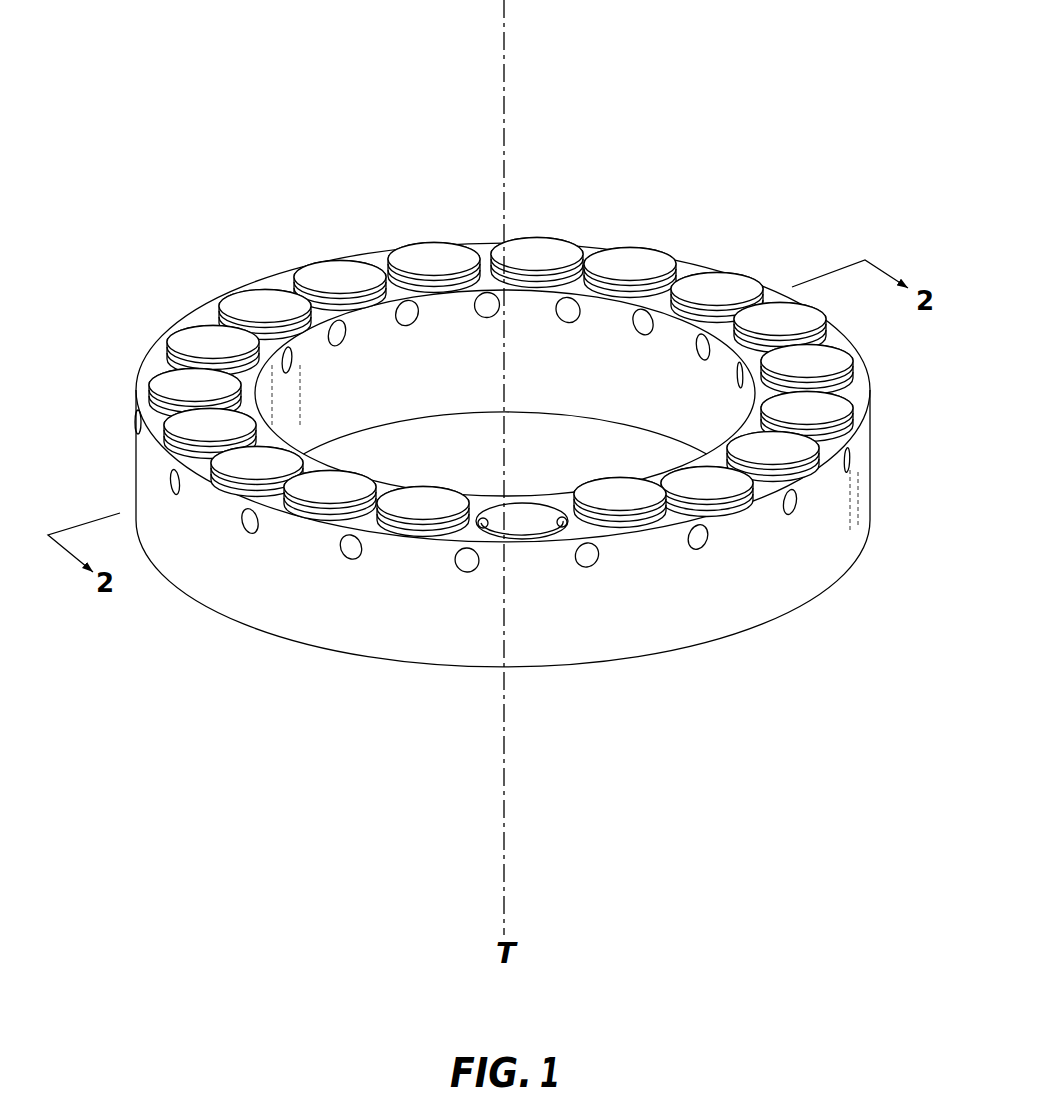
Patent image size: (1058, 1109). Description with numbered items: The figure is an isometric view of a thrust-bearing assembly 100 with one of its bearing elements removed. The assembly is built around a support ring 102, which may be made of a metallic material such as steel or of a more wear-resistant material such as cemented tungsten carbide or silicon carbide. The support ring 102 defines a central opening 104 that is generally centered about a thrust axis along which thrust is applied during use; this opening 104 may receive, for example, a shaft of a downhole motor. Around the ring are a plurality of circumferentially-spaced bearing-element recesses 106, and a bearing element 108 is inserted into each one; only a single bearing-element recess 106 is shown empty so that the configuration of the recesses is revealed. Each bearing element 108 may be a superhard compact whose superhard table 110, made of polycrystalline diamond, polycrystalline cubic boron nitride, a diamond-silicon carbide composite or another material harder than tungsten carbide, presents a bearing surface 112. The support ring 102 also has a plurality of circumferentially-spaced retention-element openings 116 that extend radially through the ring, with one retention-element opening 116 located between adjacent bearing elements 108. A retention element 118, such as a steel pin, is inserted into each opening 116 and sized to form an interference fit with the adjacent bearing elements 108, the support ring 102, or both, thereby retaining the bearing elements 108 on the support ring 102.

The thrust-bearing assembly 100 is at (797, 168).
The support ring 102 is at (787, 577).
The opening 104 is at (524, 476).
The bearing-element recess 106 is at (527, 530).
The bearing element 108 is at (408, 545).
The superhard table 110 is at (433, 540).
The bearing surface 112 is at (362, 528).
The retention-element opening 116 is at (486, 293).
The retention element 118 is at (343, 557).